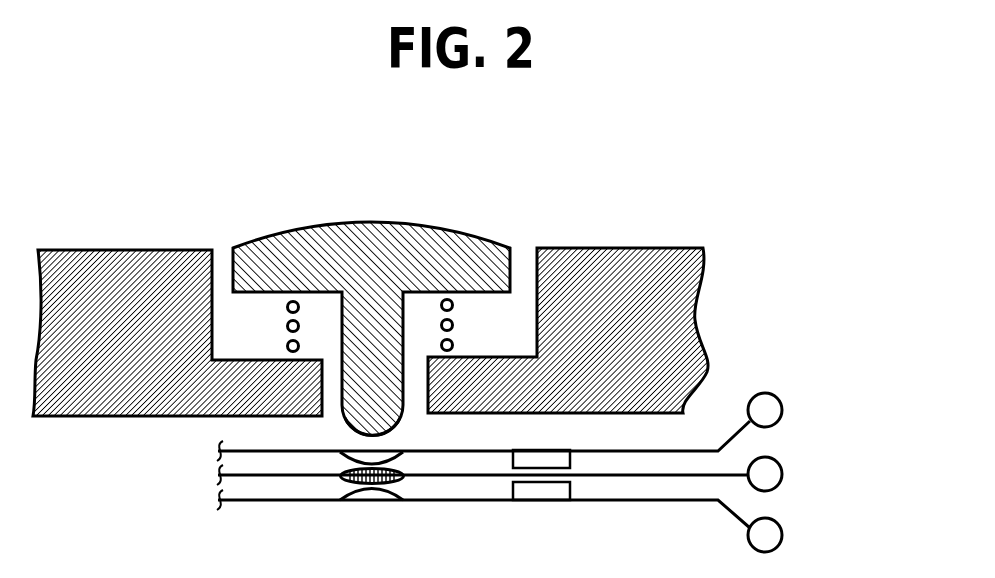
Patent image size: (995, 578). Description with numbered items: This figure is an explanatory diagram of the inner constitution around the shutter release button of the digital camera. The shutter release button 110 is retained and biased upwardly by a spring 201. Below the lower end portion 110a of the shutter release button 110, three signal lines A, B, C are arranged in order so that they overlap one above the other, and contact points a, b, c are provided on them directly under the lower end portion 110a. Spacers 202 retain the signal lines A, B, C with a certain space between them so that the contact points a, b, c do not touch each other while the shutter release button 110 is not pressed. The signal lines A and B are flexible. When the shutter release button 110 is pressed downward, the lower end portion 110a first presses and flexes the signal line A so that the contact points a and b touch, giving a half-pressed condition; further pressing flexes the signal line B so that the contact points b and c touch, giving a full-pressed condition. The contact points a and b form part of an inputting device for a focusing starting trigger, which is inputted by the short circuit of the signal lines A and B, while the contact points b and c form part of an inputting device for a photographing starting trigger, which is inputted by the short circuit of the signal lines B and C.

The shutter release button 110 is at (311, 237).
The lower end portion 110a is at (346, 431).
The spring 201 is at (456, 324).
The spacers 202 is at (571, 460).
The contact point a is at (341, 452).
The contact point b is at (343, 476).
The contact point c is at (403, 491).
The signal line A is at (781, 402).
The signal line B is at (781, 465).
The signal line C is at (781, 527).